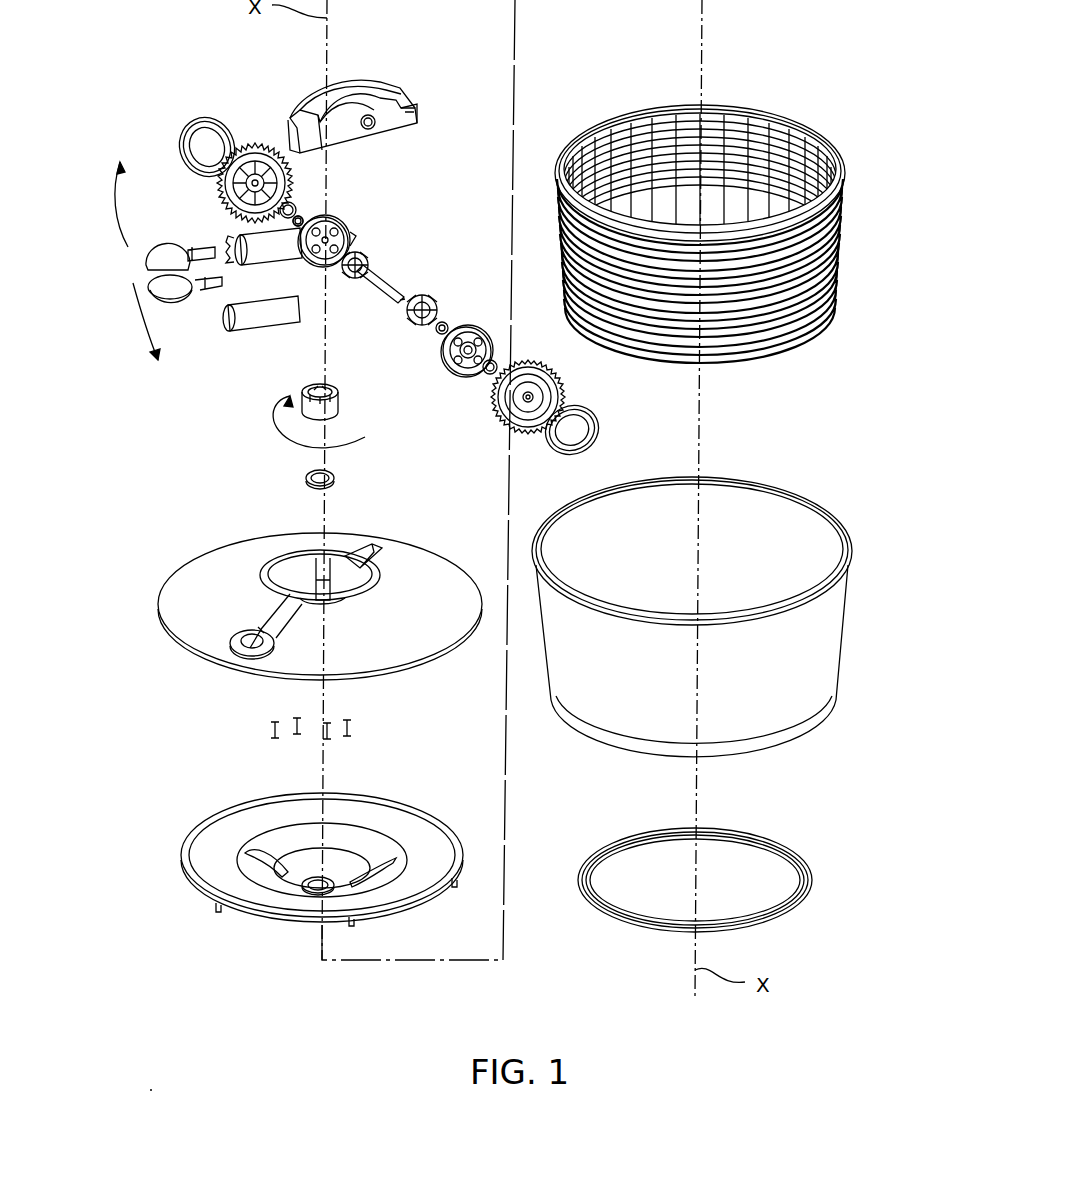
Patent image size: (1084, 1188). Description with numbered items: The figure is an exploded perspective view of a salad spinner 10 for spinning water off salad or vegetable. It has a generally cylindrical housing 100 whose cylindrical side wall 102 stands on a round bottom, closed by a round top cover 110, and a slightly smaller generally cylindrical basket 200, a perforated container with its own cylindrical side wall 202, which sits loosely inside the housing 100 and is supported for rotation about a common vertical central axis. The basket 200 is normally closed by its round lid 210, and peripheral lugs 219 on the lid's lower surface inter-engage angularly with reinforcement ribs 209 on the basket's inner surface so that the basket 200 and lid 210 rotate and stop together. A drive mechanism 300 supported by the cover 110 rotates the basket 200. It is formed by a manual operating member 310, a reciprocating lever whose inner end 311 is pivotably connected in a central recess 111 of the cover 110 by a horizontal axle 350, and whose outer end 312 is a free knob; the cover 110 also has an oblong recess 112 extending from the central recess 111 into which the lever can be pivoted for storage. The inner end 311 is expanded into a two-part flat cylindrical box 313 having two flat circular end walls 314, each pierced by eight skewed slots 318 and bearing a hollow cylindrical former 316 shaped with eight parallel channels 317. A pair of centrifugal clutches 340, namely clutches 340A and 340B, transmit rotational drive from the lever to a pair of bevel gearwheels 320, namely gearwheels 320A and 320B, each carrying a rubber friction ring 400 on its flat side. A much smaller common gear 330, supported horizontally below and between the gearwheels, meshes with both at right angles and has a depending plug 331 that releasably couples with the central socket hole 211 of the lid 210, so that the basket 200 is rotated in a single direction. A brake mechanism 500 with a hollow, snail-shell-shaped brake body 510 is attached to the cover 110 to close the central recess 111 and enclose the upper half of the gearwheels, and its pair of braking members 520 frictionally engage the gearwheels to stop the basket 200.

The salad spinner 10 is at (205, 1036).
The housing 100 is at (818, 748).
The cylindrical side wall 102 is at (828, 637).
The top cover 110 is at (235, 686).
The central recess 111 is at (362, 573).
The oblong recess 112 is at (242, 642).
The basket 200 is at (818, 366).
The cylindrical side wall 202 is at (838, 246).
The reinforcement ribs 209 is at (787, 118).
The lid 210 is at (259, 931).
The central socket hole 211 is at (322, 880).
The peripheral lugs 219 is at (216, 906).
The drive mechanism 300 is at (215, 396).
The manual operating member 310 is at (265, 256).
The inner end 311 is at (385, 215).
The outer end 312 is at (168, 250).
The flat cylindrical box 313 is at (340, 224).
The end walls 314 is at (497, 346).
The former 316 is at (497, 346).
The channels 317 is at (479, 330).
The slots 318 is at (338, 232).
The gearwheel 320 is at (448, 248).
The gearwheel 320A is at (566, 391).
The gearwheel 320B is at (258, 148).
The common gear 330 is at (338, 392).
The plug 331 is at (365, 437).
The centrifugal clutches 340 is at (429, 264).
The centrifugal clutch 340A is at (456, 282).
The centrifugal clutch 340B is at (366, 258).
The horizontal axle 350 is at (384, 293).
The ring 400 is at (207, 117).
The brake mechanism 500 is at (430, 75).
The brake body 510 is at (412, 122).
The braking members 520 is at (370, 116).